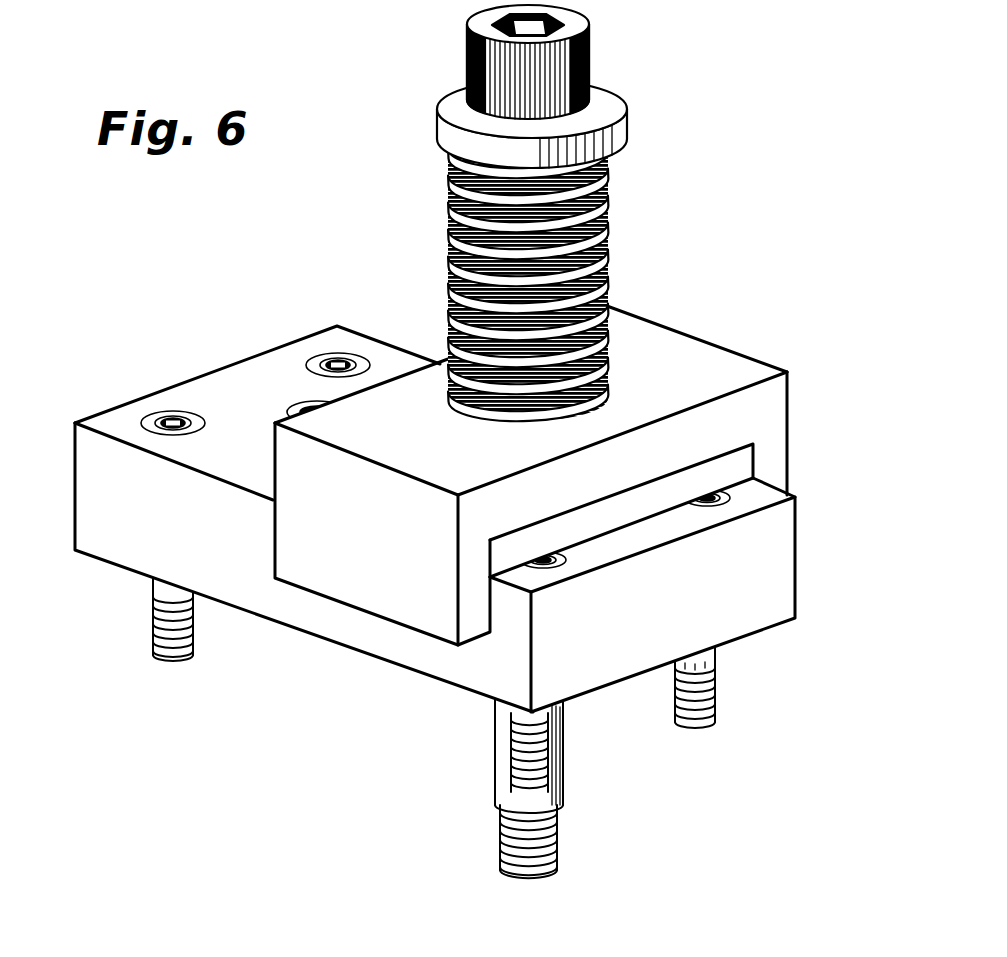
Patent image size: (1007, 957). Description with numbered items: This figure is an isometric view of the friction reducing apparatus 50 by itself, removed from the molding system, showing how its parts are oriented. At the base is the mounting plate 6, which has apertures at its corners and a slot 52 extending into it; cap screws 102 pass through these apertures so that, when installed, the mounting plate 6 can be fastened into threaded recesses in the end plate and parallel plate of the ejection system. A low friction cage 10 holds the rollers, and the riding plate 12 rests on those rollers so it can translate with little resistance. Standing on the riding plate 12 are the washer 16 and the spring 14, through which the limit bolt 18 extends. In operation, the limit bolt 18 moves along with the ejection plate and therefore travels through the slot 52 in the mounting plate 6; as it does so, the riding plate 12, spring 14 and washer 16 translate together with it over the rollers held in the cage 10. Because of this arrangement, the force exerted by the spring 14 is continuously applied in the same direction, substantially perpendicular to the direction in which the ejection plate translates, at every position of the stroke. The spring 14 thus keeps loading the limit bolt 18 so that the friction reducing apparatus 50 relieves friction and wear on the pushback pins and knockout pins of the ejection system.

The mounting plate 6 is at (772, 580).
The low friction cage 10 is at (740, 465).
The riding plate 12 is at (672, 383).
The spring 14 is at (452, 240).
The washer 16 is at (608, 104).
The limit bolt 18 is at (497, 732).
The friction reducing apparatus 50 is at (752, 255).
The slot 52 is at (308, 407).
The cap screws 102 is at (155, 589).